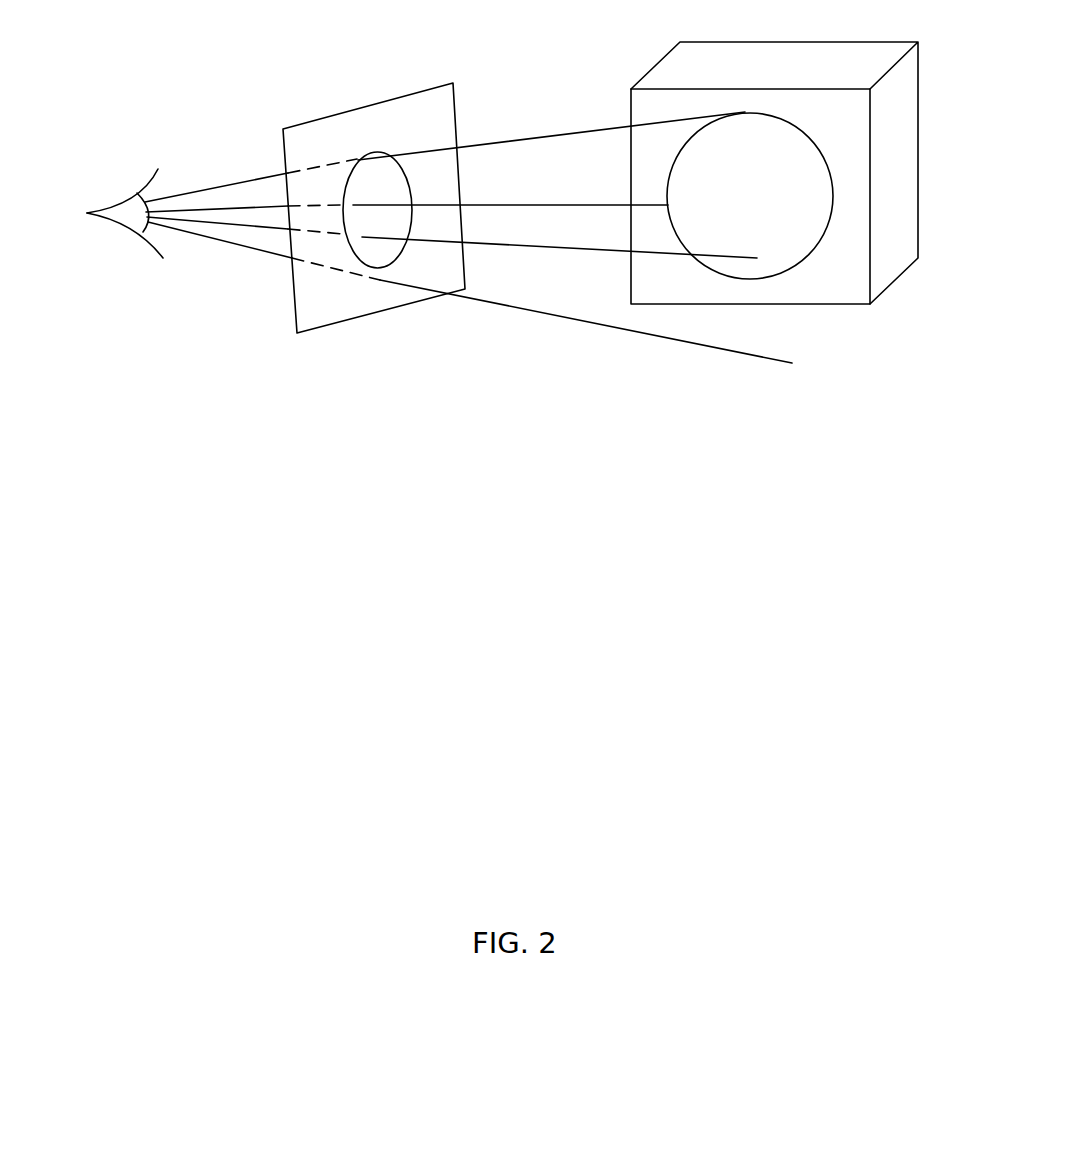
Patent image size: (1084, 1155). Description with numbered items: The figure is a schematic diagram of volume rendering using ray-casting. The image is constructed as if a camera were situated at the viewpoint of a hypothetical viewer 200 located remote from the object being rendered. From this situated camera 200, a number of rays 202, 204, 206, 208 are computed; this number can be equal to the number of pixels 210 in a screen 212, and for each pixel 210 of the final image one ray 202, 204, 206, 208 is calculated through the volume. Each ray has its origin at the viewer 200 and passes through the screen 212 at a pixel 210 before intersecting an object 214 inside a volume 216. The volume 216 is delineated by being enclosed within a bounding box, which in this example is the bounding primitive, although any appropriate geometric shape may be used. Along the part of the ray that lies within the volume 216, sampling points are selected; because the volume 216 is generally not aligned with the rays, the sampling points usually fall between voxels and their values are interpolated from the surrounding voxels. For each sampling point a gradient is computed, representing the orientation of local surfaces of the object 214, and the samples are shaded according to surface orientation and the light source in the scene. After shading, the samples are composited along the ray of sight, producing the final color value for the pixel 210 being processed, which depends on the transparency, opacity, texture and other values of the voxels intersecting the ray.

The hypothetical viewer 200 is at (125, 228).
The ray 202 is at (533, 137).
The ray 204 is at (543, 207).
The ray 206 is at (548, 247).
The ray 208 is at (537, 310).
The pixel 210 is at (377, 151).
The screen 212 is at (348, 318).
The object 214 is at (822, 148).
The volume 216 is at (877, 42).